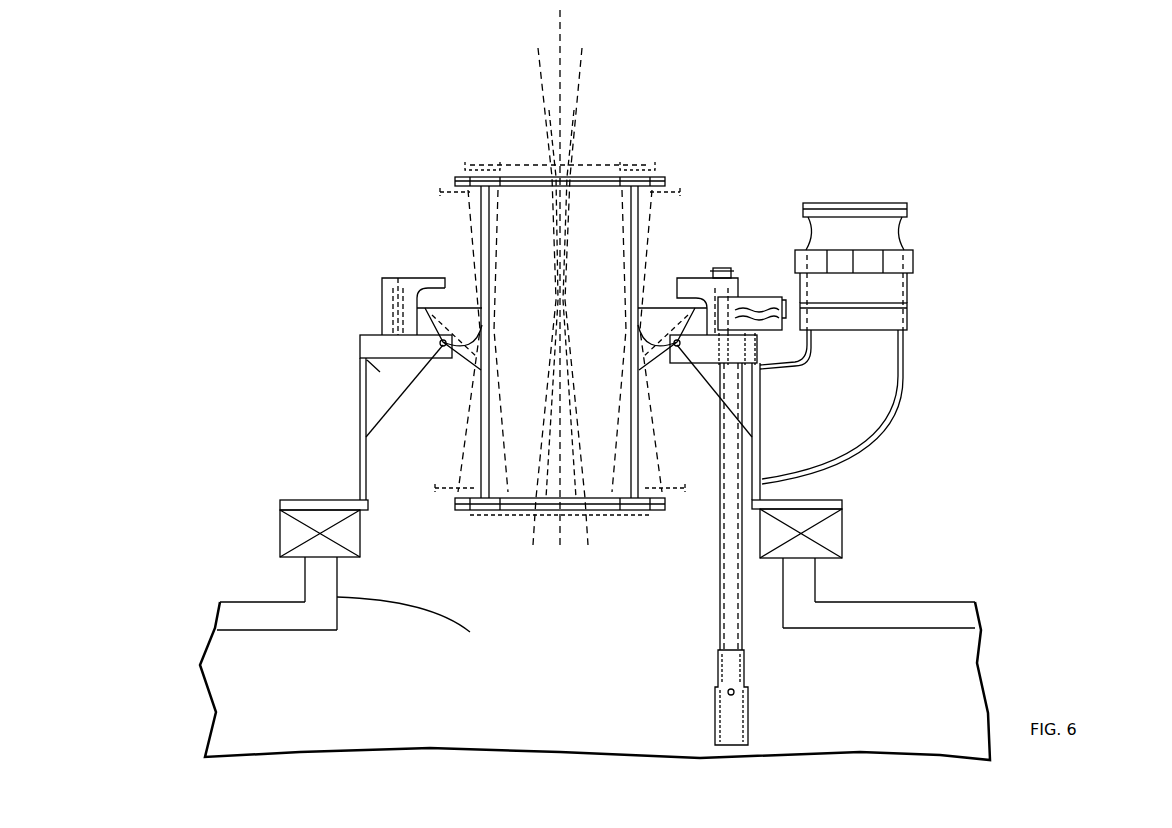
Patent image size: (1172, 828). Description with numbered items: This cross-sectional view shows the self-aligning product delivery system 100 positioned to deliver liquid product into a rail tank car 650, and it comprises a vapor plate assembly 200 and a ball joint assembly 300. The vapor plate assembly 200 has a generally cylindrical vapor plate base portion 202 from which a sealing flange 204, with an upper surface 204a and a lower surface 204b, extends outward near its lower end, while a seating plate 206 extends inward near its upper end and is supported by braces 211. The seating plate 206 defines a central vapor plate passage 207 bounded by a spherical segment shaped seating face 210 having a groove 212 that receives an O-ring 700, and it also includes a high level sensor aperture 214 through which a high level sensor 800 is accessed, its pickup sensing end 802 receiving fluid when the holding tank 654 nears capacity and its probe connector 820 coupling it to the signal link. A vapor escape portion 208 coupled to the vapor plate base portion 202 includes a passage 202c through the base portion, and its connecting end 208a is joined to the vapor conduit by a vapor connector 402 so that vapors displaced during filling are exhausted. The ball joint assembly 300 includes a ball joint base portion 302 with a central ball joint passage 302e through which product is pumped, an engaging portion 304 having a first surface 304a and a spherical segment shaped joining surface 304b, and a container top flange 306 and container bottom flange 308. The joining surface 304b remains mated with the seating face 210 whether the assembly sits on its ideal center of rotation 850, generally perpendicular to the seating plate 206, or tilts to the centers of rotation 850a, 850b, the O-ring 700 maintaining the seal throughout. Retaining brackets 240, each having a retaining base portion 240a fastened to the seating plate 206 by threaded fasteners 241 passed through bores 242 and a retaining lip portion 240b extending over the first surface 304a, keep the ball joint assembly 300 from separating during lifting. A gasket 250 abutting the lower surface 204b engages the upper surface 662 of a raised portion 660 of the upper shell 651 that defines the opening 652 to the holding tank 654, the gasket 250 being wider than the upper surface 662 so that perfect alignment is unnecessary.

The self-aligning product delivery system 100 is at (276, 341).
The vapor plate assembly 200 is at (549, 482).
The vapor plate base portion 202 is at (360, 412).
The passage 202c is at (762, 450).
The sealing flange 204 is at (532, 508).
The upper surface 204a is at (345, 500).
The lower surface 204b is at (297, 517).
The seating plate 206 is at (372, 335).
The central vapor plate passage 207 is at (676, 355).
The vapor escape portion 208 is at (859, 385).
The connecting end 208a is at (890, 287).
The spherical segment shaped seating face 210 is at (437, 343).
The braces 211 is at (400, 428).
The groove 212 is at (444, 350).
The high level sensor aperture 214 is at (803, 360).
The retaining brackets 240 is at (568, 277).
The retaining base portion 240a is at (382, 300).
The retaining lip portion 240b is at (430, 290).
The threaded fasteners 241 is at (716, 268).
The bores 242 is at (395, 278).
The gasket 250 is at (578, 524).
The ball joint assembly 300 is at (585, 328).
The ball joint base portion 302 is at (612, 227).
The central ball joint passage 302e is at (590, 172).
The engaging portion 304 is at (455, 322).
The first surface 304a is at (665, 318).
The spherical segment shaped joining surface 304b is at (662, 352).
The container top flange 306 is at (618, 176).
The container bottom flange 308 is at (612, 508).
The vapor connector 402 is at (912, 262).
The rail tank car 650 is at (613, 658).
The upper shell 651 is at (248, 620).
The opening 652 is at (305, 598).
The holding tank 654 is at (955, 706).
The raised portion 660 is at (327, 613).
The upper surface 662 is at (330, 562).
The O-ring 700 is at (455, 355).
The high level sensor 800 is at (722, 568).
The pickup sensing end 802 is at (748, 708).
The probe connector 820 is at (789, 331).
The center of rotation 850 is at (560, 58).
The center of rotation 850a is at (541, 115).
The center of rotation 850b is at (582, 84).